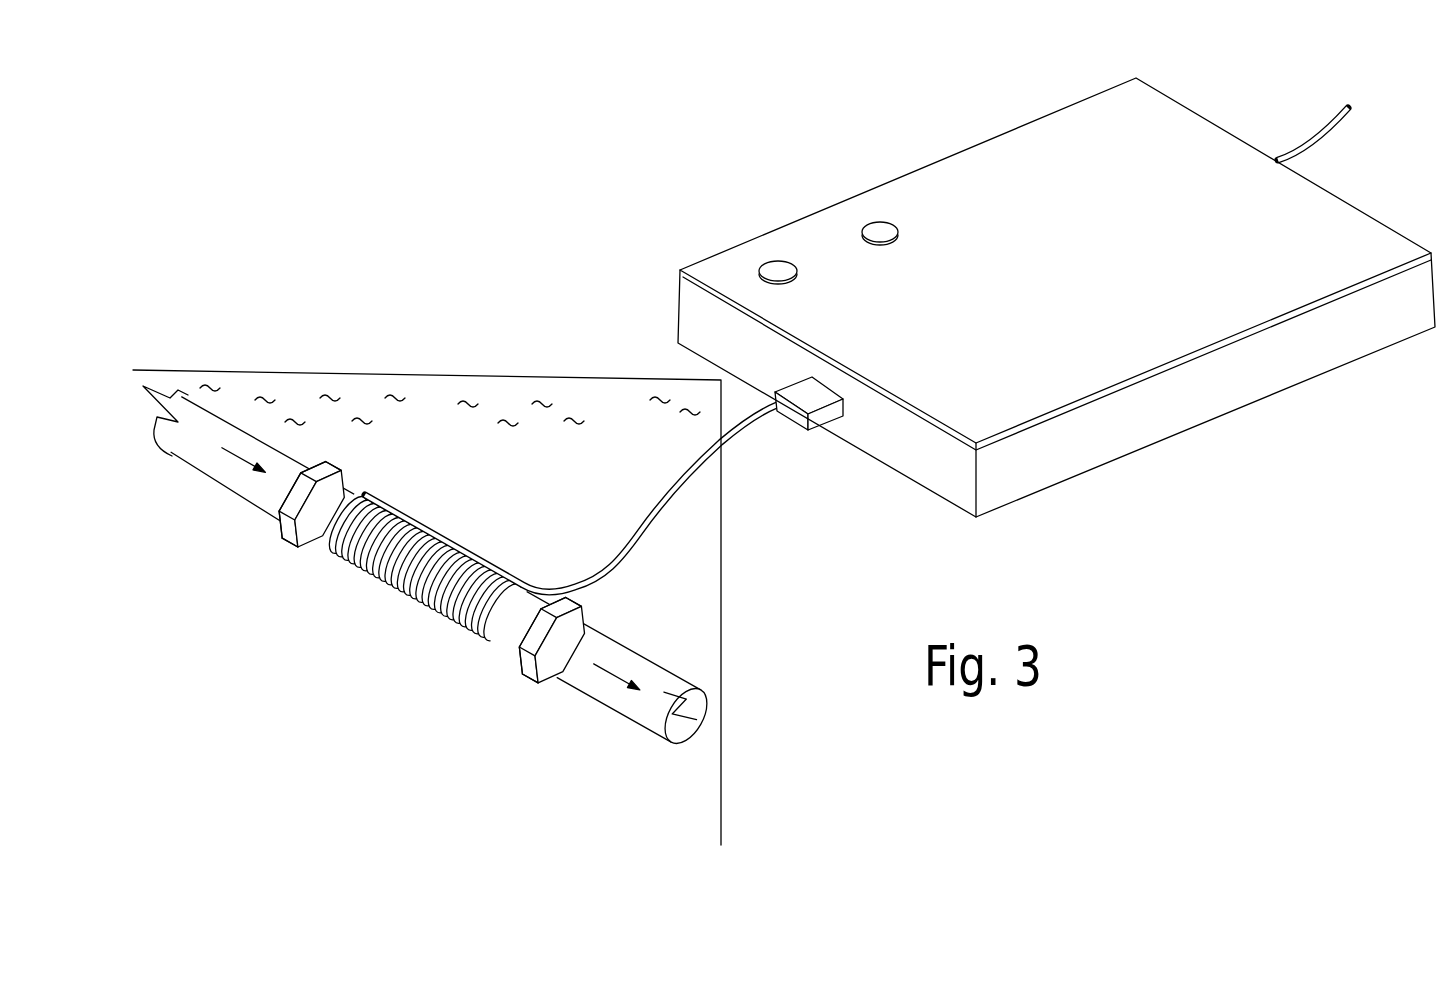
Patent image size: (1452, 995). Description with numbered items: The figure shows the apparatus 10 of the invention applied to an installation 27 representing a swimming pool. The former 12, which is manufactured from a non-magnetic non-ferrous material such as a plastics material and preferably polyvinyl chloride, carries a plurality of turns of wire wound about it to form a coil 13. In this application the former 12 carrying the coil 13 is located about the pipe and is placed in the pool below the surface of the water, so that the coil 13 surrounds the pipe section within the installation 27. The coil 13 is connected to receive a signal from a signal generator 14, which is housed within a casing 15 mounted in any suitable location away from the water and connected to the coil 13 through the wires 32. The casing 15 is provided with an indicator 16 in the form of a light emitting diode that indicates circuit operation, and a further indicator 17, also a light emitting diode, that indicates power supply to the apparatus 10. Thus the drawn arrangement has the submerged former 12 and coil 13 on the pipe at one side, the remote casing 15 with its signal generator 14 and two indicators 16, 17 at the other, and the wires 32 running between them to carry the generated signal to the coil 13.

The apparatus 10 is at (496, 232).
The former 12 is at (330, 542).
The coil 13 is at (447, 527).
The signal generator 14 is at (912, 130).
The casing 15 is at (1013, 128).
The indicator 16 is at (752, 240).
The further indicator 17 is at (862, 218).
The installation 27 is at (228, 370).
The wires 32 is at (450, 411).